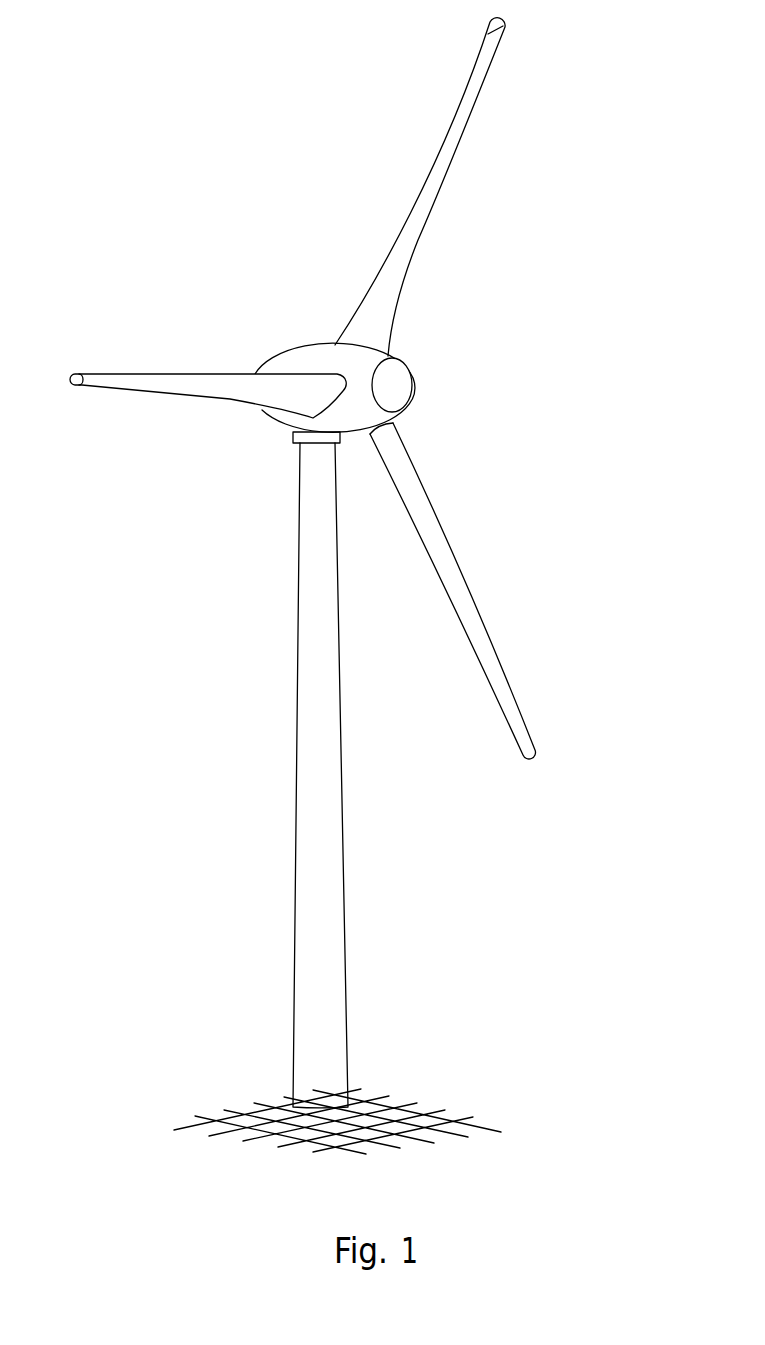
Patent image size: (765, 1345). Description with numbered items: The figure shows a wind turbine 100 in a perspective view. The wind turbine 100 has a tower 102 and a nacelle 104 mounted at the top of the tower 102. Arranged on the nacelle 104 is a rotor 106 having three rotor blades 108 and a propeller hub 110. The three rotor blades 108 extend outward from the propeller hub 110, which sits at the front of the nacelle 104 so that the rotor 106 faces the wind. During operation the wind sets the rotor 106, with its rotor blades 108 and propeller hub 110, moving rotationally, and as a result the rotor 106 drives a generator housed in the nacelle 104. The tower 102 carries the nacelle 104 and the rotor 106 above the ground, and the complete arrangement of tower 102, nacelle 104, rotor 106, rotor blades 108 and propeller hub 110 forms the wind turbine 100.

The wind turbine 100 is at (248, 517).
The tower 102 is at (325, 880).
The nacelle 104 is at (313, 358).
The rotor 106 is at (485, 306).
The rotor blades 108 is at (140, 378).
The propeller hub 110 is at (395, 387).